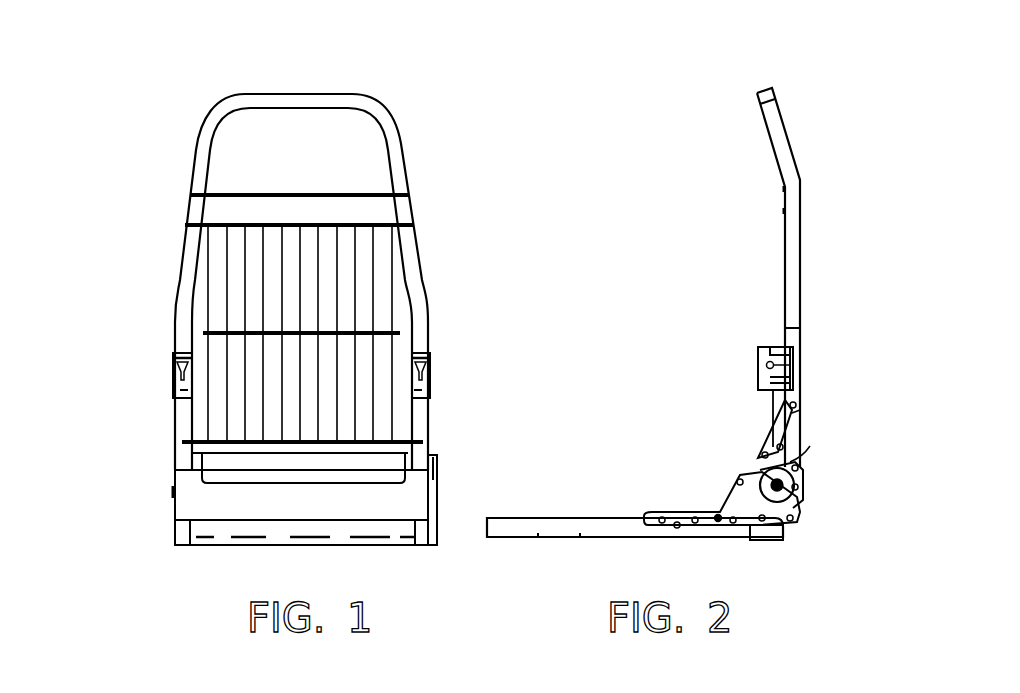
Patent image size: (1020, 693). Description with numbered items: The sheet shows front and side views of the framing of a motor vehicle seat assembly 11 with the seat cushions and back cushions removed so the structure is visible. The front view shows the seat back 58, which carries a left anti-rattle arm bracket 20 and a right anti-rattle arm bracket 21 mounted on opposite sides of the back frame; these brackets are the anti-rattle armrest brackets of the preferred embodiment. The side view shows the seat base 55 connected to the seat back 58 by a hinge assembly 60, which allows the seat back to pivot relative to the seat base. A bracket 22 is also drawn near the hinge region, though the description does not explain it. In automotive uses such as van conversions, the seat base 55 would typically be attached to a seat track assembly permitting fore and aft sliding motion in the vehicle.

In FIG. 1, the motor vehicle seat assembly 11 is at (177, 93).
In FIG. 1, the left anti-rattle arm bracket 20 is at (167, 375).
In FIG. 1, the right anti-rattle arm bracket 21 is at (437, 368).
In FIG. 2, the right anti-rattle arm bracket 21 is at (748, 377).
In FIG. 2, the latch bracket 22 is at (758, 360).
In FIG. 2, the seat base 55 is at (572, 520).
In FIG. 1, the seat back 58 is at (398, 173).
In FIG. 2, the seat back 58 is at (797, 238).
In FIG. 2, the hinge assembly 60 is at (793, 495).